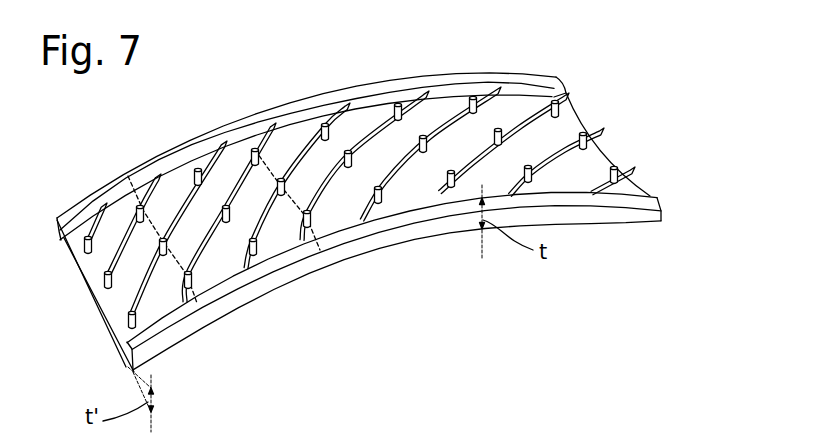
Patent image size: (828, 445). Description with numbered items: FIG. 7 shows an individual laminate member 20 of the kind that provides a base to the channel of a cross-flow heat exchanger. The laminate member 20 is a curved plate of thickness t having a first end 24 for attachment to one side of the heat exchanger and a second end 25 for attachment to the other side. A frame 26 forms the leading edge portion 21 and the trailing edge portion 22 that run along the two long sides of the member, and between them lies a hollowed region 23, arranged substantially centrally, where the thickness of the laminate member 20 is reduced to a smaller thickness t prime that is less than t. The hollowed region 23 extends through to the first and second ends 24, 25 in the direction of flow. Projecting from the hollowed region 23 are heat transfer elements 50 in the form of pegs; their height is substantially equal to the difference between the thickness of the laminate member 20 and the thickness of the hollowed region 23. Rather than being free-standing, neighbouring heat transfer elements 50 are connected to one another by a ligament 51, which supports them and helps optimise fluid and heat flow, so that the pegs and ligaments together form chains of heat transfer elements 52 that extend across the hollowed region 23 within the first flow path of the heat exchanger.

The laminate member 20 is at (368, 213).
The leading edge portion 21 is at (351, 252).
The trailing edge portion 22 is at (291, 107).
The hollowed region 23 is at (600, 137).
The first end 24 is at (565, 93).
The second end 25 is at (85, 289).
The frame 26 is at (135, 342).
The heat transfer element 50 is at (197, 170).
The ligament 51 is at (384, 127).
The chain of heat transfer elements 52 is at (477, 150).